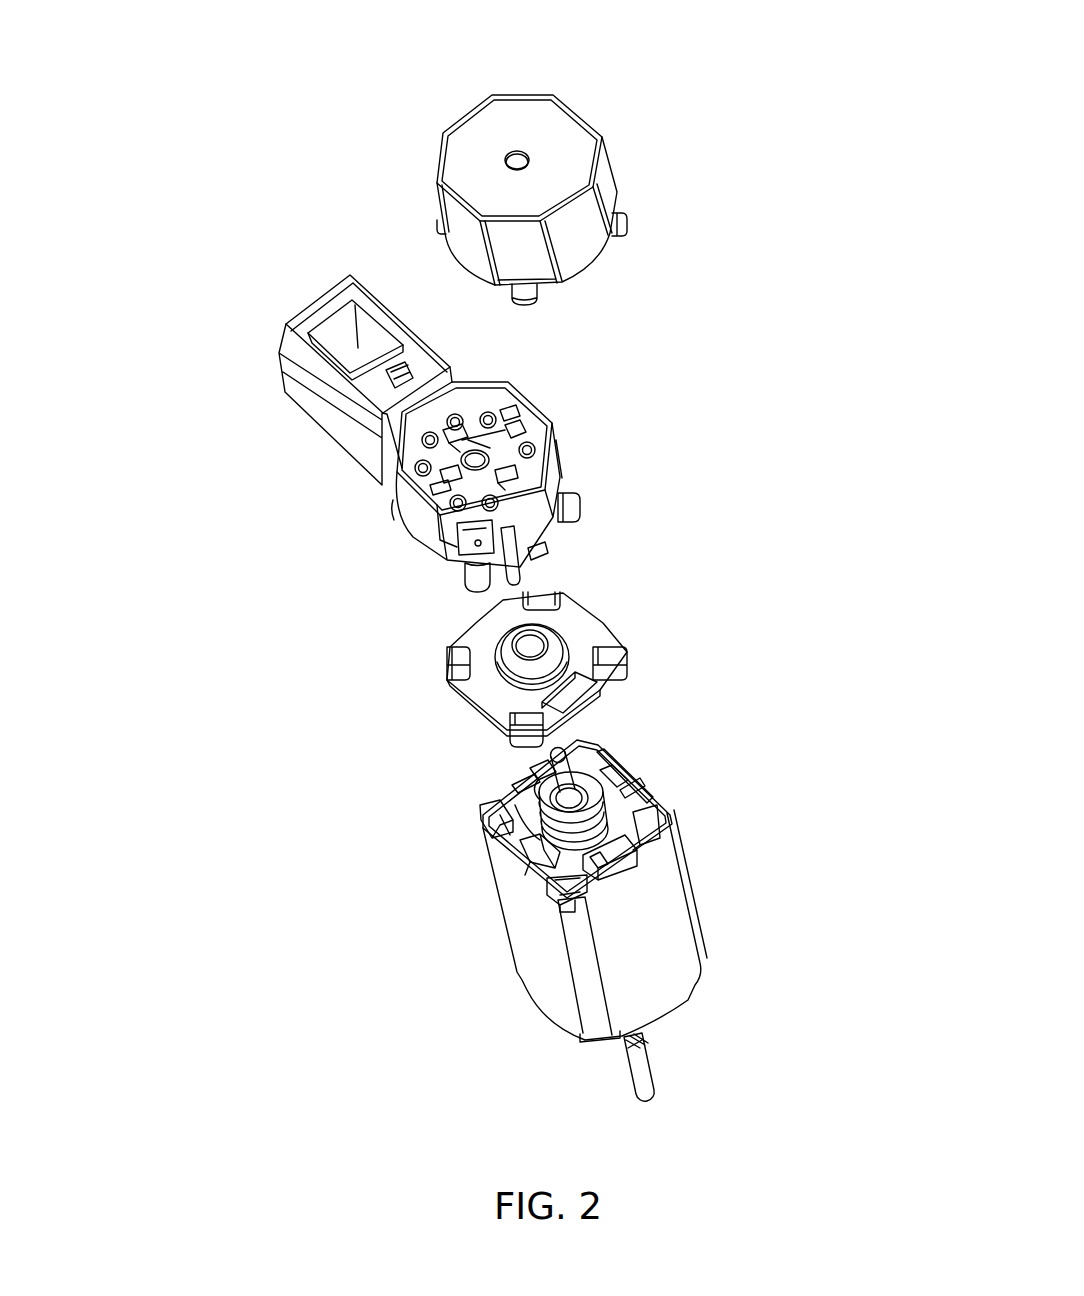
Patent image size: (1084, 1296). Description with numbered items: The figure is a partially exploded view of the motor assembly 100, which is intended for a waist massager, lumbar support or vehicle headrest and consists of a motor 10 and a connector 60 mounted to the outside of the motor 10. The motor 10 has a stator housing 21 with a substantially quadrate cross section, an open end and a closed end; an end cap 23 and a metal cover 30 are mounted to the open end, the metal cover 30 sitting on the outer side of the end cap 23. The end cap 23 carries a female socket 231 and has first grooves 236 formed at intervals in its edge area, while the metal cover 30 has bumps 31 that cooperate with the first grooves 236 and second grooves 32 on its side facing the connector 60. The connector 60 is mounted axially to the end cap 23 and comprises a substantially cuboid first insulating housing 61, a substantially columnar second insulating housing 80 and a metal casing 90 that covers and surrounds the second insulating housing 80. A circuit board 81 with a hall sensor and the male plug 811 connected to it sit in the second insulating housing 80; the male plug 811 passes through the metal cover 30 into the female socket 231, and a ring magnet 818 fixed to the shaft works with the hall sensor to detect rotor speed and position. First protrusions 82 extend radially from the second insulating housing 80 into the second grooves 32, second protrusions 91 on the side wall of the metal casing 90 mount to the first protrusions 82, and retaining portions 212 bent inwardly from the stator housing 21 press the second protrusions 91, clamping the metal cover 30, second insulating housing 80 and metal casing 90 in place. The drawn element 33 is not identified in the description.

The motor assembly 100 is at (576, 36).
The metal casing 90 is at (587, 247).
The second protrusions 91 is at (627, 222).
The connector 60 is at (323, 401).
The first insulating housing 61 is at (330, 418).
The second insulating housing 80 is at (558, 474).
The circuit board 81 is at (507, 420).
The first protrusions 82 is at (572, 503).
The male plug 811 is at (547, 550).
The metal cover 30 is at (543, 669).
The bumps 31 is at (625, 678).
The second grooves 32 is at (453, 665).
The motor 10 is at (582, 923).
The stator housing 21 is at (668, 952).
The end cap 23 is at (633, 798).
The ring magnet 818 is at (583, 808).
The retaining portions 212 is at (488, 825).
The first grooves 236 is at (505, 833).
The female socket 231 is at (610, 860).
The brush 33 is at (537, 887).